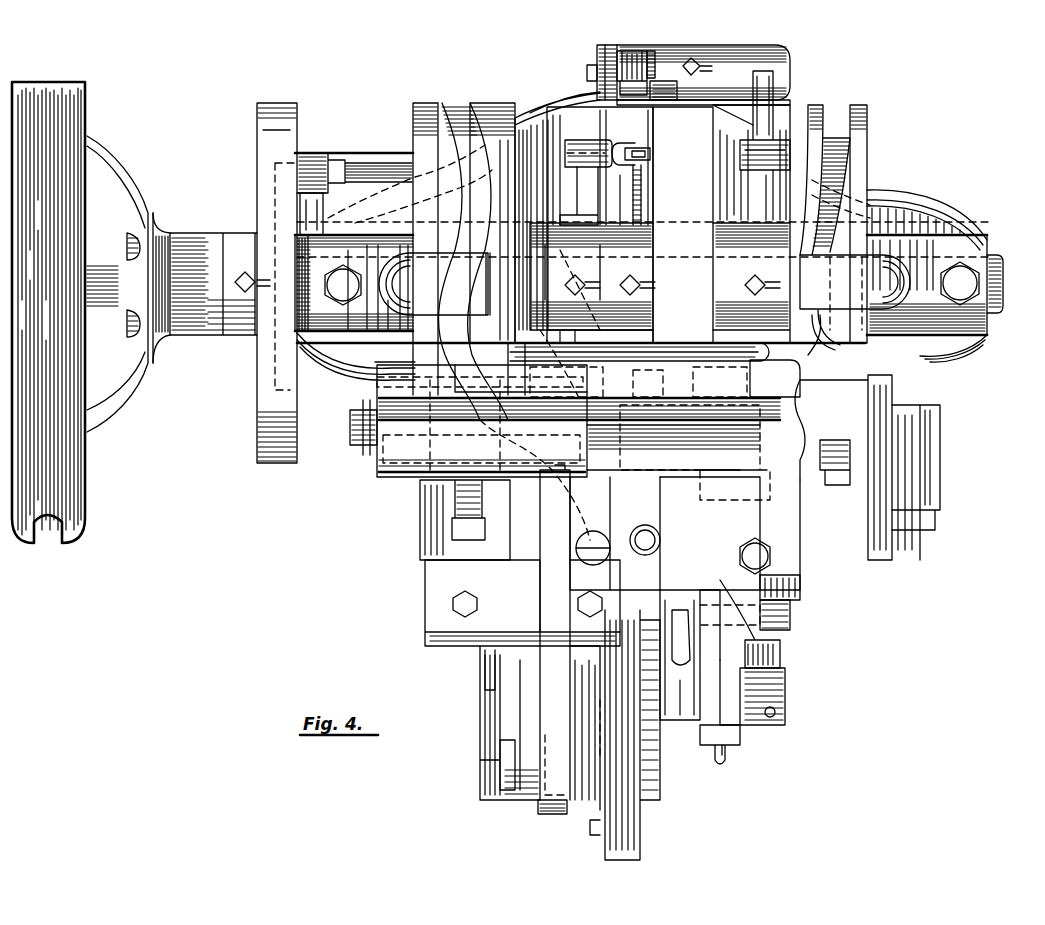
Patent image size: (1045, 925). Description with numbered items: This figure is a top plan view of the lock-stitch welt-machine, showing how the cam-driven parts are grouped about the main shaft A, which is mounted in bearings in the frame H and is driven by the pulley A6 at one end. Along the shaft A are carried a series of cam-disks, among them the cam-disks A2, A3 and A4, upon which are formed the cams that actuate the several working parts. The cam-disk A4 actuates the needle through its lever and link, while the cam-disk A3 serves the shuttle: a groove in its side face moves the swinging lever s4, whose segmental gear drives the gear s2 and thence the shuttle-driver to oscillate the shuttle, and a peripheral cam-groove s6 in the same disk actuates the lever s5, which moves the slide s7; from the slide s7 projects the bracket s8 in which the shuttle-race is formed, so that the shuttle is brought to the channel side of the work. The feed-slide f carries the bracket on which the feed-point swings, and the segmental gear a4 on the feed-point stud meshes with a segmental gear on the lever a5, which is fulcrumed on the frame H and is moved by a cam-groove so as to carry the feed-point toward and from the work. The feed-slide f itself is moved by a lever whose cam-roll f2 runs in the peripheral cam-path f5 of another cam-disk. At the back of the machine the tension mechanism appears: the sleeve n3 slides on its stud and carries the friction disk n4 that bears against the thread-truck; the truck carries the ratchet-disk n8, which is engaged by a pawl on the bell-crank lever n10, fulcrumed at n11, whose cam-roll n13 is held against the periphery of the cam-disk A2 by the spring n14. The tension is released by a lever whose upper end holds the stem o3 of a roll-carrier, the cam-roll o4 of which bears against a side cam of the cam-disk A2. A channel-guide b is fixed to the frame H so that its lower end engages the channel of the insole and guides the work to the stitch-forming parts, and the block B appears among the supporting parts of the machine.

The main shaft A is at (1003, 275).
The cam-disk A2 is at (683, 225).
The cam-disk A3 is at (415, 128).
The cam-disk A4 is at (270, 147).
The pulley A6 is at (104, 222).
The frame H is at (915, 200).
The bearing block B is at (372, 403).
The gear s2 is at (554, 812).
The swinging lever s4 is at (555, 632).
The lever s5 is at (428, 546).
The peripheral cam-groove s6 is at (455, 120).
The slide s7 is at (428, 613).
The bracket s8 is at (616, 824).
The feed-slide f is at (938, 474).
The cam-roll f2 is at (862, 440).
The peripheral cam-path f5 is at (832, 115).
The segmental gear a4 is at (795, 612).
The lever a5 is at (802, 590).
The sleeve n3 is at (778, 692).
The disk n4 is at (772, 650).
The ratchet-disk n8 is at (645, 188).
The bell-crank lever n10 is at (612, 58).
The fulcrum n11 is at (590, 72).
The cam-roll n13 is at (686, 72).
The spring n14 is at (653, 66).
The stem o3 is at (566, 150).
The cam-roll o4 is at (652, 152).
The channel-guide b is at (722, 738).